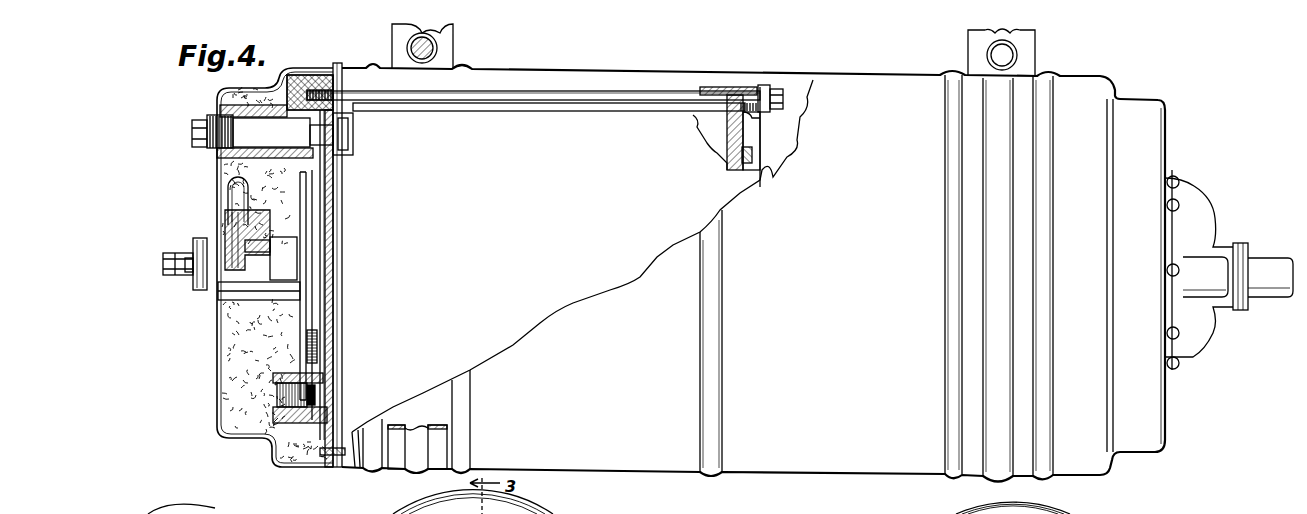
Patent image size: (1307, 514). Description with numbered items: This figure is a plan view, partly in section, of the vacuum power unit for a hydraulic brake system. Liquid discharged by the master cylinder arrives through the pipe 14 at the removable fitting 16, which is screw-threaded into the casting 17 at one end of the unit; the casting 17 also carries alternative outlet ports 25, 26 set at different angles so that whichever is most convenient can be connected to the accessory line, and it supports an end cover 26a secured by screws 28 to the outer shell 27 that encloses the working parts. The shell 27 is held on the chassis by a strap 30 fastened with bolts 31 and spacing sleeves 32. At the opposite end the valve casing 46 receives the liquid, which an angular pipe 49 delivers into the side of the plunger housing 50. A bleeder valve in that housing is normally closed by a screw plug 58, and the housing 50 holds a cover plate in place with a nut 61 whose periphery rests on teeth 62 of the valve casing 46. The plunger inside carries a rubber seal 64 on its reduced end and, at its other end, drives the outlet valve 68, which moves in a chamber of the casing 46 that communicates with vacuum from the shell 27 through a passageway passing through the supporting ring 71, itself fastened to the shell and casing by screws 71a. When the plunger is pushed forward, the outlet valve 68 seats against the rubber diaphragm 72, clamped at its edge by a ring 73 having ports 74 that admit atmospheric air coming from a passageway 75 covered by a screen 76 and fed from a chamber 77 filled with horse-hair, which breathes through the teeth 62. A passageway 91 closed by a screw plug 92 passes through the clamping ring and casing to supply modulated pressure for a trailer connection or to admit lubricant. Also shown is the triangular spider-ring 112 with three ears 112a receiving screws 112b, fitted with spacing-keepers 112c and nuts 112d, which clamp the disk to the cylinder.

The pipe 14 is at (1267, 283).
The removable fitting 16 is at (1243, 308).
The casting 17 is at (1213, 247).
The outlet port 25 is at (1197, 330).
The outlet port 26 is at (1210, 212).
The end cover 26a is at (1148, 108).
The outer shell 27 is at (644, 74).
The screws 28 is at (1180, 203).
The strap 30 is at (450, 55).
The bolts 31 is at (413, 43).
The spacing sleeves 32 is at (433, 38).
The valve casing 46 is at (318, 88).
The angular pipe 49 is at (237, 195).
The plunger housing 50 is at (190, 312).
The screw plug 58 is at (180, 274).
The nut 61 is at (204, 294).
The teeth 62 is at (290, 70).
The rubber seal 64 is at (260, 246).
The outlet valve 68 is at (322, 142).
The supporting ring 71 is at (342, 66).
The screws 71a is at (325, 457).
The diaphragm 72 is at (323, 186).
The ring 73 is at (335, 218).
The ports 74 is at (335, 243).
The passageway 75 is at (325, 393).
The screen 76 is at (283, 410).
The chamber 77 is at (227, 415).
The passageway 91 is at (275, 131).
The screw plug 92 is at (200, 121).
The triangular spider-ring 112 is at (761, 135).
The ears 112a is at (758, 88).
The screws 112b is at (783, 106).
The spacing-keepers 112c is at (733, 87).
The nuts 112d is at (783, 89).